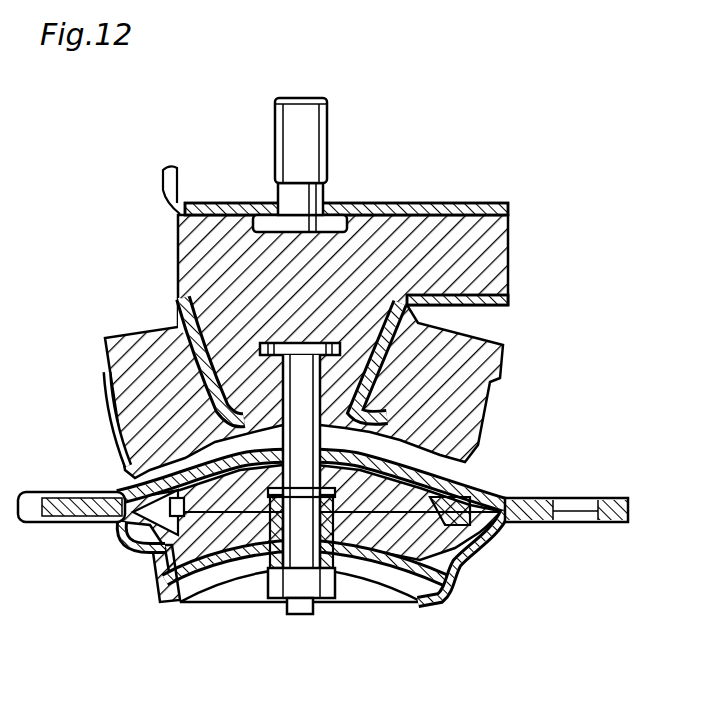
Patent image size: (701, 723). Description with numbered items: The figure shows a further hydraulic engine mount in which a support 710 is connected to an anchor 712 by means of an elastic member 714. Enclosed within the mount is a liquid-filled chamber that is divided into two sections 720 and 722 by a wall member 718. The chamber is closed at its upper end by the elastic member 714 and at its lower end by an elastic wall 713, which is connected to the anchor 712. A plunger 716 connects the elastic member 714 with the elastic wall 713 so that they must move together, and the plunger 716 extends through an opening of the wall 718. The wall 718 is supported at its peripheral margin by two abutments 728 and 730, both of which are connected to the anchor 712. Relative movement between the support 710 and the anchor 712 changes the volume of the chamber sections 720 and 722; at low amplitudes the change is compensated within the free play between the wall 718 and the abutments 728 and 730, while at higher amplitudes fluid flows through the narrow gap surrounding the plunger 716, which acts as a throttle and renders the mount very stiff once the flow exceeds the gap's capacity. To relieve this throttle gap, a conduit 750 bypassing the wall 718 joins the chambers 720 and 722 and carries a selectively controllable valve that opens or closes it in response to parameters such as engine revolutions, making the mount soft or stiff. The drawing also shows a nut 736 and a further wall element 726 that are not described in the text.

The support 710 is at (378, 205).
The elastic member 714 is at (205, 255).
The chamber section 720 is at (212, 466).
The abutment 728 is at (455, 472).
The abutment 730 is at (470, 500).
The anchor 712 is at (53, 523).
The conduit 750 is at (127, 547).
The elastic wall 713 is at (178, 595).
The chamber section 722 is at (220, 598).
The plunger 716 is at (258, 595).
The nut 736 is at (336, 598).
The wall member 718 is at (385, 585).
The right support wall 726 is at (457, 560).